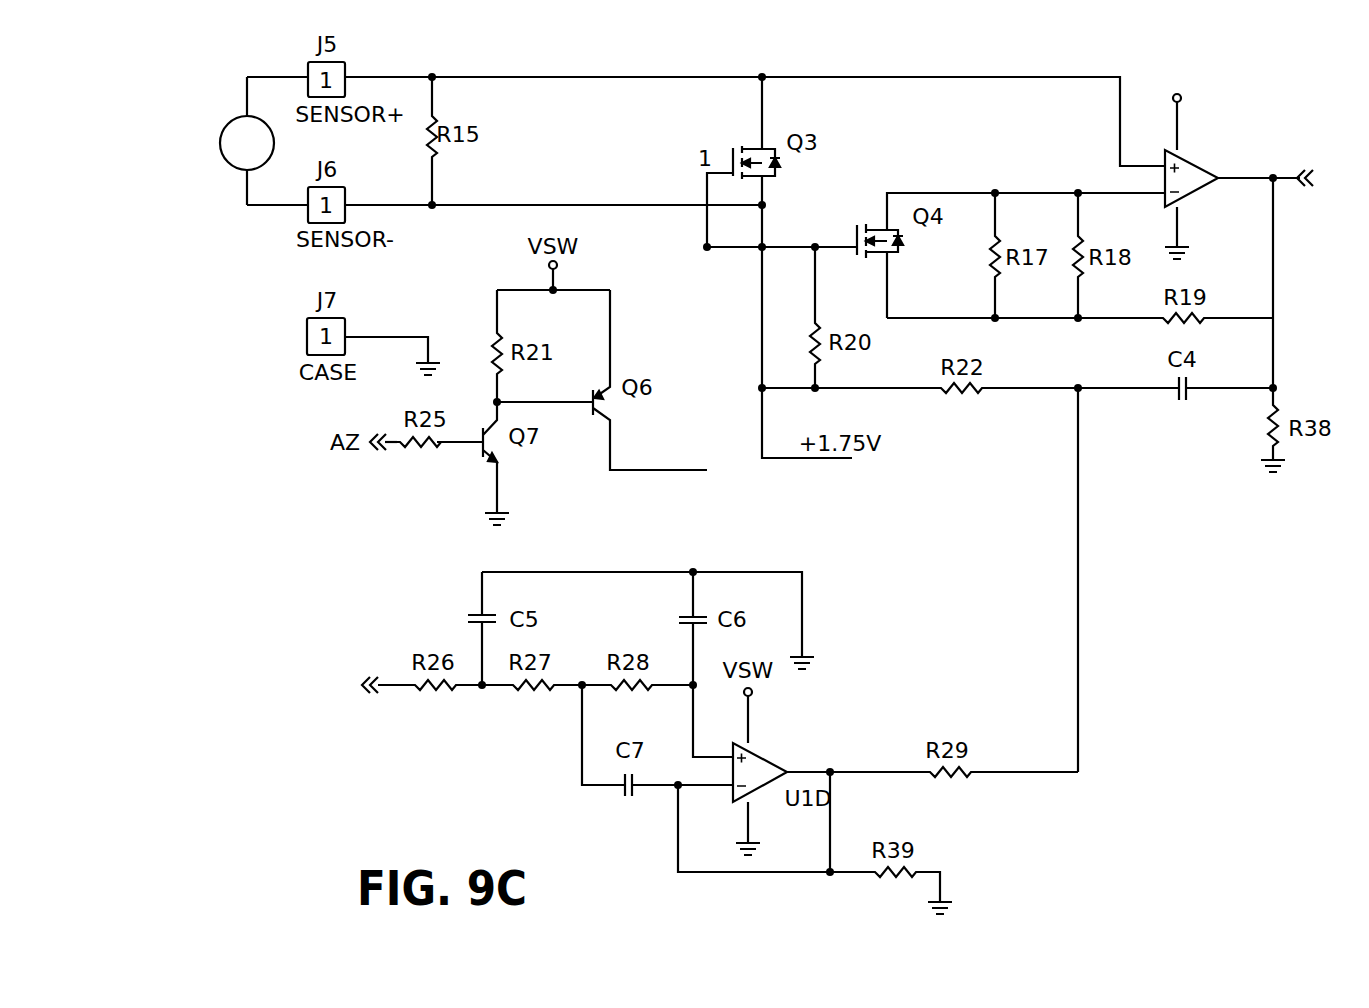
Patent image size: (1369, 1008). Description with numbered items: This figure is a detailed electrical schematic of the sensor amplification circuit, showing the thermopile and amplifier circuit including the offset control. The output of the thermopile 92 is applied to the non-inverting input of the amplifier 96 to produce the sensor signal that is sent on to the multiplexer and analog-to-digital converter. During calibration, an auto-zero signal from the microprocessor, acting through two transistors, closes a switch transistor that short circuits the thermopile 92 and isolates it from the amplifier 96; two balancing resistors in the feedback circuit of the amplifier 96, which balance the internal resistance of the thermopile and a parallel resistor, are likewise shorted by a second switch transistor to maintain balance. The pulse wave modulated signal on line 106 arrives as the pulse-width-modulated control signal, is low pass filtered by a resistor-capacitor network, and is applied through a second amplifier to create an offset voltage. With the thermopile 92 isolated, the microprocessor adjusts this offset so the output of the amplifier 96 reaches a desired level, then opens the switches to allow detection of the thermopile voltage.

The thermopile 92 is at (222, 158).
The amplifier 96 is at (1195, 163).
The line 106 is at (390, 688).